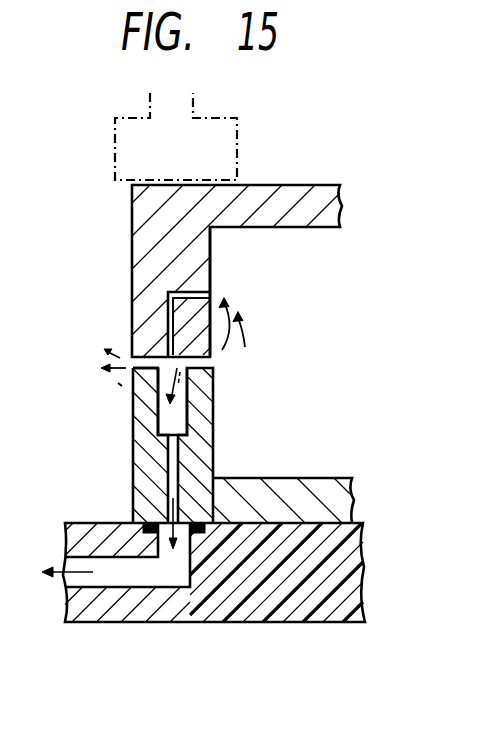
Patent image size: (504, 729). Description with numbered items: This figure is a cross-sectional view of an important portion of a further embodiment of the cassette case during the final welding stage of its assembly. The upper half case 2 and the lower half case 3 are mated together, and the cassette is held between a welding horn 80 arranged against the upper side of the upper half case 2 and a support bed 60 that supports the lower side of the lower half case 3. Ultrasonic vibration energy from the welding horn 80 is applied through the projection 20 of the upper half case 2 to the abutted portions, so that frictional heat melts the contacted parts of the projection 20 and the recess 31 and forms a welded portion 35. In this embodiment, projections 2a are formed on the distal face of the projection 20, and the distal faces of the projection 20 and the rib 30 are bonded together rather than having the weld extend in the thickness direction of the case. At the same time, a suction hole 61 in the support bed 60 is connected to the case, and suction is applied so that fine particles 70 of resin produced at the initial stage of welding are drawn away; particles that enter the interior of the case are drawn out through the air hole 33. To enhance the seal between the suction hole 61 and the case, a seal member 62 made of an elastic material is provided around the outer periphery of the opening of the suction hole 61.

The upper half case 2 is at (287, 190).
The projections 2a is at (138, 353).
The lower half case 3 is at (338, 500).
The projection 20 is at (198, 247).
The rib 30 is at (215, 424).
The recess 31 is at (160, 420).
The air hole 33 is at (192, 292).
The welded portion 35 is at (142, 392).
The support bed 60 is at (222, 592).
The suction hole 61 is at (127, 578).
The seal member 62 is at (150, 521).
The fine particles 70 is at (230, 366).
The welding horn 80 is at (115, 152).